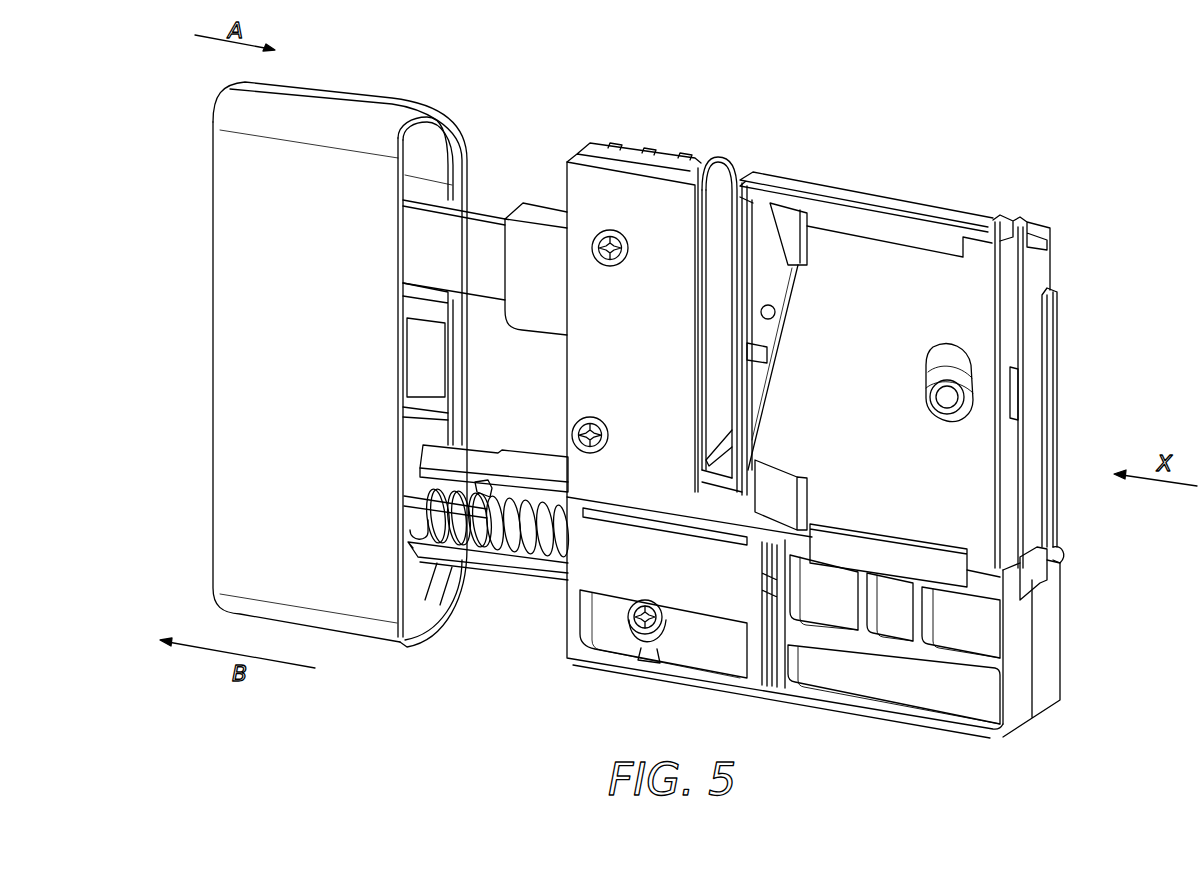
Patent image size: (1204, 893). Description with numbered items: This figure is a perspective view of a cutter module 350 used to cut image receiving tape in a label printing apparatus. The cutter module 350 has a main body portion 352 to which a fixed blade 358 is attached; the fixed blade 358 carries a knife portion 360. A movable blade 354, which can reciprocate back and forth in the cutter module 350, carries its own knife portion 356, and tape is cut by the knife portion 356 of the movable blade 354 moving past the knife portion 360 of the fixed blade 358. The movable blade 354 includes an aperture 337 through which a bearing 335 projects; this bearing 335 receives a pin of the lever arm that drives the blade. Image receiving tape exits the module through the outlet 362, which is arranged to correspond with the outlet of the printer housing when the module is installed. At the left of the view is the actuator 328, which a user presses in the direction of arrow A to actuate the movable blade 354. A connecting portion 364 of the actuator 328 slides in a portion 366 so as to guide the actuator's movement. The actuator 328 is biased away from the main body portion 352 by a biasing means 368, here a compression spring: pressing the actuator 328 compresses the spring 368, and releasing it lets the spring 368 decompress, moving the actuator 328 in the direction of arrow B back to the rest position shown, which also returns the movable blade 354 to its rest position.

The actuator 328 is at (228, 335).
The bearing 335 is at (943, 404).
The aperture 337 is at (940, 347).
The cutter module 350 is at (665, 108).
The main body portion 352 is at (932, 438).
The movable blade 354 is at (960, 290).
The knife portion 356 is at (757, 270).
The fixed blade 358 is at (585, 182).
The knife portion 360 is at (697, 328).
The outlet 362 is at (742, 167).
The connecting portion 364 is at (483, 290).
The portion 366 is at (510, 219).
The biasing means 368 is at (517, 566).